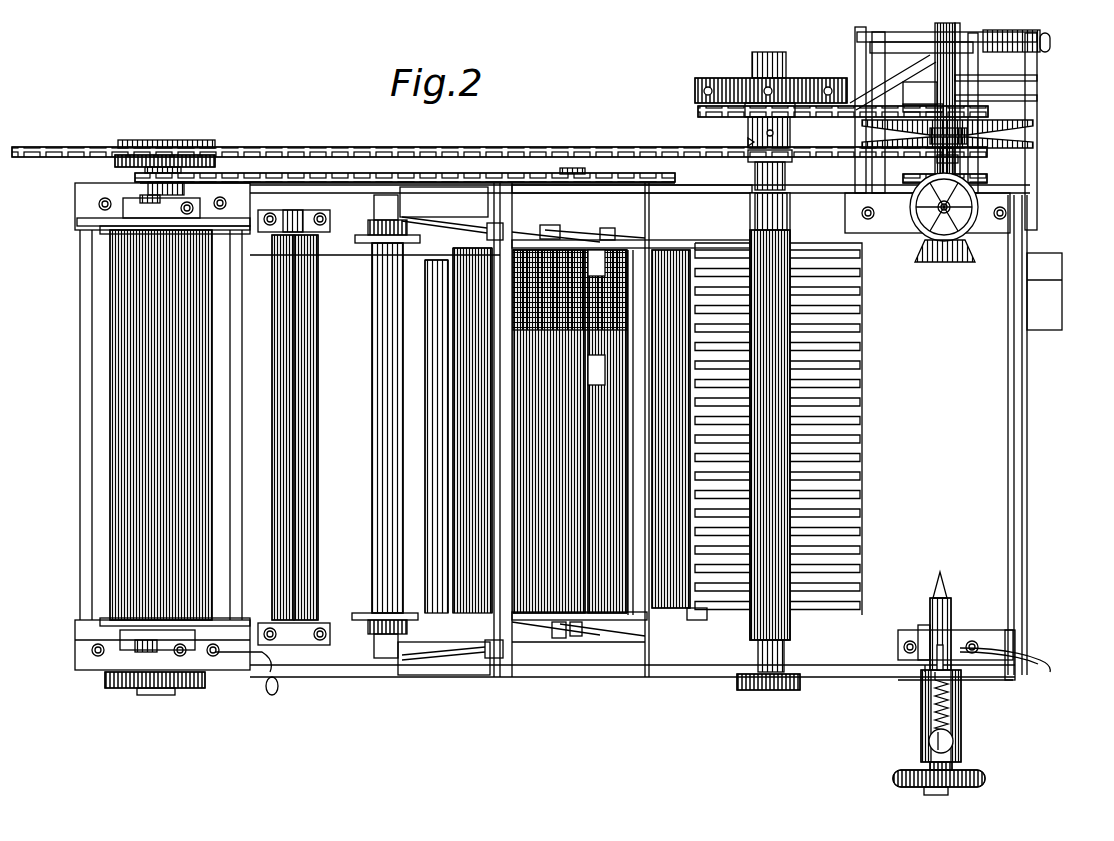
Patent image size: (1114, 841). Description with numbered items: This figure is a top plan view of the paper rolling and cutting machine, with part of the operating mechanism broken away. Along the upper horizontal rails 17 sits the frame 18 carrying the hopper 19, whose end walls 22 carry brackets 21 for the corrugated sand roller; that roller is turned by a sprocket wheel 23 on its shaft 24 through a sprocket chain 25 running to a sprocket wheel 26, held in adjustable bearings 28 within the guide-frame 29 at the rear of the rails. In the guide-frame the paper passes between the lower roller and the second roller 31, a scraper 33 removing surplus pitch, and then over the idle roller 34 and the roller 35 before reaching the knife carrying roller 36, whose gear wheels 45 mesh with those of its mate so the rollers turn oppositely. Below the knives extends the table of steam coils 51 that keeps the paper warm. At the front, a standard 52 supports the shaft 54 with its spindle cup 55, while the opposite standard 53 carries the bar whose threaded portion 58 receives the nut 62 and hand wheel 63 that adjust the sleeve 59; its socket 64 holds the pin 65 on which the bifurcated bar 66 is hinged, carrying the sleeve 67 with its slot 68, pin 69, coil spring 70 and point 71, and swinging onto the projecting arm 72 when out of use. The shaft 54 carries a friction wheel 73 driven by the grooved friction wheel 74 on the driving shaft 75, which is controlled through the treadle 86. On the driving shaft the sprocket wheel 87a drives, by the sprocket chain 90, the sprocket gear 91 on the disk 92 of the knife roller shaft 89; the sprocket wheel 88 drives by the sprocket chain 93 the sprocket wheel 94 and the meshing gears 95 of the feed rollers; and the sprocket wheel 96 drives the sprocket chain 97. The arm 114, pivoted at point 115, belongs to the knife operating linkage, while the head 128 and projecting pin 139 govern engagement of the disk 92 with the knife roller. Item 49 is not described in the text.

The upper horizontal rails 17 is at (345, 220).
The frame 18 is at (430, 220).
The hopper 19 is at (520, 642).
The brackets 21 is at (580, 636).
The end walls 22 is at (555, 640).
The sprocket wheel 23 is at (607, 174).
The shaft 24 is at (575, 168).
The sprocket chain 25 is at (455, 174).
The sprocket wheel 26 is at (140, 182).
The adjustable bearings 28 is at (120, 210).
The guide-frame 29 is at (228, 208).
The second roller 31 is at (118, 560).
The scraper 33 is at (222, 568).
The idle roller 34 is at (310, 563).
The roller 35 is at (372, 528).
The knife carrying roller 36 is at (788, 622).
The gear wheels 45 is at (770, 690).
The roller 49 is at (495, 660).
The steam coils 51 is at (840, 468).
The standard 52 is at (905, 222).
The standard 53 is at (963, 635).
The shaft 54 is at (960, 88).
The cup 55 is at (945, 250).
The threaded portion 58 is at (938, 795).
The sleeve 59 is at (961, 700).
The nut 62 is at (955, 765).
The hand wheel 63 is at (985, 778).
The socket 64 is at (955, 738).
The pin 65 is at (935, 745).
The bifurcated bar 66 is at (935, 735).
The sleeve 67 is at (950, 608).
The slot 68 is at (925, 665).
The pin 69 is at (935, 680).
The coil spring 70 is at (958, 683).
The point 71 is at (940, 572).
The projecting arm 72 is at (1035, 656).
The friction wheel 73 is at (1020, 143).
The grooved friction wheel 74 is at (1020, 123).
The driving shaft 75 is at (975, 102).
The foot lever or treadle 86 is at (990, 178).
The sprocket wheel 87a is at (936, 112).
The sprocket wheel 88 is at (925, 168).
The shaft 89 is at (781, 171).
The sprocket chain 90 is at (745, 115).
The sprocket gear 91 is at (698, 108).
The disk 92 is at (725, 72).
The sprocket chain 93 is at (375, 142).
The sprocket wheel 94 is at (110, 147).
The meshing gears 95 is at (185, 690).
The sprocket wheel 96 is at (962, 190).
The sprocket chain 97 is at (968, 172).
The arm 114 is at (905, 72).
The pivot point 115 is at (870, 97).
The head 128 is at (748, 140).
The projecting pin 139 is at (773, 134).